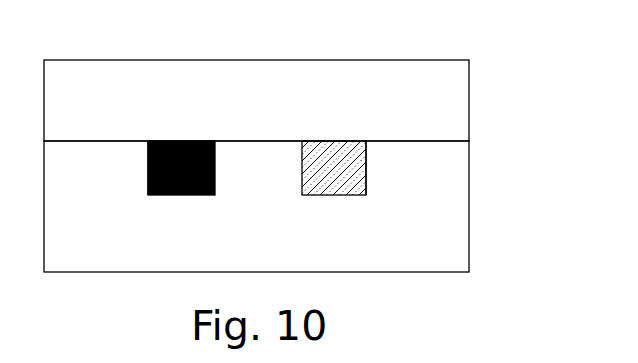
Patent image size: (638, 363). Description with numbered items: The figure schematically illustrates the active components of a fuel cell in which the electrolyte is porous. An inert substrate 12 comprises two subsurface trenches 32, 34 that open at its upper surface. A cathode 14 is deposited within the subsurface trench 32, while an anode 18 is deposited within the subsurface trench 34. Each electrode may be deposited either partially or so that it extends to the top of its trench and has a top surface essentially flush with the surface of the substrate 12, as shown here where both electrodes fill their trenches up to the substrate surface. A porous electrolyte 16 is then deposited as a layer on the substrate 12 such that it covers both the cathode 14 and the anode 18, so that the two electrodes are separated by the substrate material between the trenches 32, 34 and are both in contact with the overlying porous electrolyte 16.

The substrate 12 is at (469, 247).
The porous electrolyte 16 is at (469, 83).
The anode 18 is at (172, 190).
The cathode 14 is at (324, 183).
The subsurface trench 34 is at (148, 168).
The subsurface trench 32 is at (366, 158).